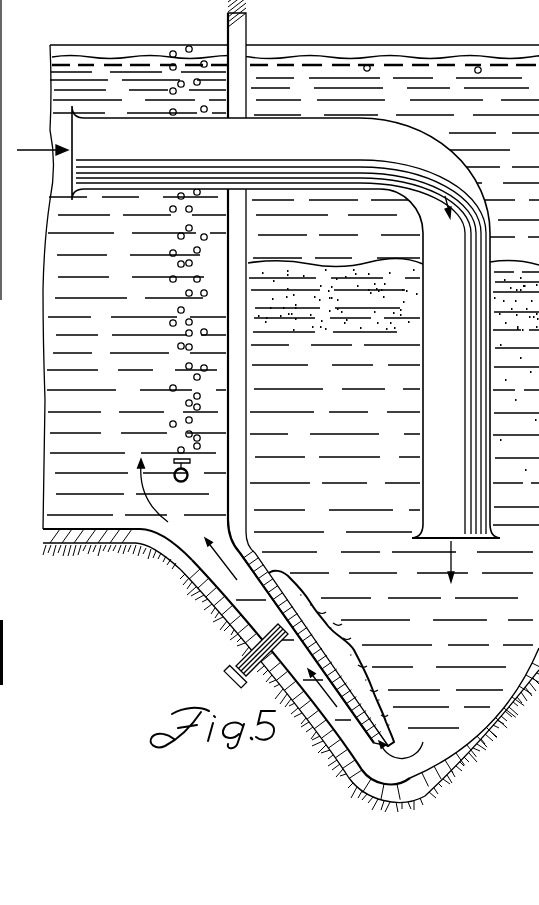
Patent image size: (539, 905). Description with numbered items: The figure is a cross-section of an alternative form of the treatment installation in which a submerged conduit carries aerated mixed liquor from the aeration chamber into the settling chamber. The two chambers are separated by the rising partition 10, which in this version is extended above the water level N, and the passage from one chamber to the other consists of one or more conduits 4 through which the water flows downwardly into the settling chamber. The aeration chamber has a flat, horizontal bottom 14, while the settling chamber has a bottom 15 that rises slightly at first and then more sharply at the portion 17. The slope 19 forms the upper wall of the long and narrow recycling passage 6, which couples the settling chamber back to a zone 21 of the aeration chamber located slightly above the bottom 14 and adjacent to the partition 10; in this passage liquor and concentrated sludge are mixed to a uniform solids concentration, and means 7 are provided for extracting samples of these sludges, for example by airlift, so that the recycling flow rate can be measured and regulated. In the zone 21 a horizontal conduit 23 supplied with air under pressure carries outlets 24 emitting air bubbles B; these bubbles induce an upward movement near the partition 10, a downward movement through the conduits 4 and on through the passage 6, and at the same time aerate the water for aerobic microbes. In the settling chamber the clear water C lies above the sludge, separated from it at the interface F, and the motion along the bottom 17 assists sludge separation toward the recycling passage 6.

The rising partition 10 is at (248, 33).
The baffle passage 4 is at (452, 185).
The bottom of chamber A 14 is at (86, 530).
The recycling passage 6 is at (246, 622).
The sample extracting means 7 is at (240, 657).
The zone of chamber A 21 is at (307, 637).
The horizontal conduit 23 is at (184, 483).
The outlets 24 is at (175, 460).
The slope 19 is at (387, 690).
The bottom of chamber D 15 is at (470, 731).
The sharply rising bottom portion 17 is at (530, 664).
The water level N is at (129, 40).
The air bubbles B is at (173, 320).
The clear water C is at (293, 239).
The interface F is at (312, 270).